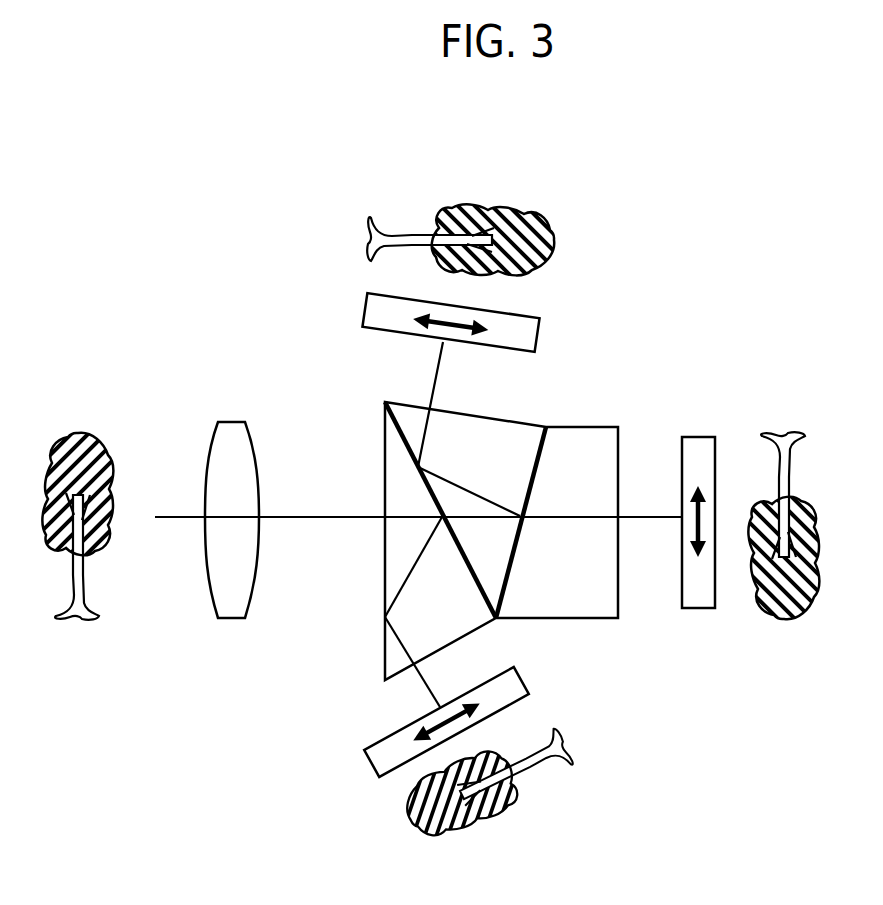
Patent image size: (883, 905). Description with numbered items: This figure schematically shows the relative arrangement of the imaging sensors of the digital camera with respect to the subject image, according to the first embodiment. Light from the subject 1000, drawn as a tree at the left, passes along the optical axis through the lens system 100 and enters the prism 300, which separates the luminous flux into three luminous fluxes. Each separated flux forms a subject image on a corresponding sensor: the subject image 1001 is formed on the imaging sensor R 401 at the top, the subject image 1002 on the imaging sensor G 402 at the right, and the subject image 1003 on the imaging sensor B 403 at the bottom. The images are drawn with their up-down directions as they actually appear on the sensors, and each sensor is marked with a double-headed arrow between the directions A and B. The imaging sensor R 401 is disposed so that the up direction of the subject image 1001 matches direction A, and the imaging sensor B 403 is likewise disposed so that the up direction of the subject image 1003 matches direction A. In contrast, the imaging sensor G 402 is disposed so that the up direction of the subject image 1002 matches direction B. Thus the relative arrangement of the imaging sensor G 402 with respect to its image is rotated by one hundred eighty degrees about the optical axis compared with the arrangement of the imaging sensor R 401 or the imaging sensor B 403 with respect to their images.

The lens system 100 is at (230, 420).
The prism 300 is at (382, 470).
The imaging sensor R 401 is at (540, 328).
The imaging sensor G 402 is at (700, 435).
The imaging sensor B 403 is at (368, 748).
The subject 1000 is at (102, 437).
The subject image 1001 is at (522, 213).
The subject image 1002 is at (787, 430).
The subject image 1003 is at (543, 773).